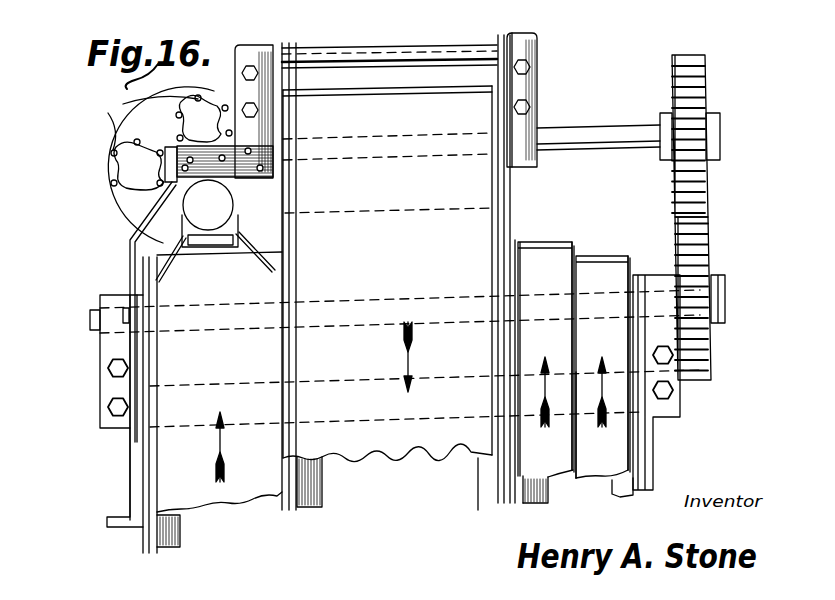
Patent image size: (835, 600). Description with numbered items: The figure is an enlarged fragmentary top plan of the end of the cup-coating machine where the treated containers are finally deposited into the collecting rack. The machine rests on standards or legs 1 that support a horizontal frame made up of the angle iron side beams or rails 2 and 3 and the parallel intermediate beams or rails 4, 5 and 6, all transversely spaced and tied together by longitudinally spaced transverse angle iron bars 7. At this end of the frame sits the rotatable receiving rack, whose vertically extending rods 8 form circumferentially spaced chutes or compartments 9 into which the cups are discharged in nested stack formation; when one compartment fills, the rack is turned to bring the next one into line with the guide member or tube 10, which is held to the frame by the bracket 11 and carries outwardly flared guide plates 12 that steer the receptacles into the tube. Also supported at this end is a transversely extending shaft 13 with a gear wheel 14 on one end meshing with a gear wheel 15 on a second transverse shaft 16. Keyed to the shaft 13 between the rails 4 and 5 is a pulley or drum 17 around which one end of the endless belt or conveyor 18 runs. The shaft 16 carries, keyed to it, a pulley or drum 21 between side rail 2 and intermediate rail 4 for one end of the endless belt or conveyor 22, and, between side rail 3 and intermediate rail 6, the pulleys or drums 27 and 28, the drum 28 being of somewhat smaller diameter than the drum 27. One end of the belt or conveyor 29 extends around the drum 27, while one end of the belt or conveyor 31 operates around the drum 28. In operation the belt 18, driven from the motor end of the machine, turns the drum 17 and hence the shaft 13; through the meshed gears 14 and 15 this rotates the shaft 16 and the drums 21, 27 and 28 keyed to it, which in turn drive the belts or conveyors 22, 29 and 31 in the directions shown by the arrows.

The standards or legs 1 is at (112, 518).
The angle iron side beam or rail 2 is at (167, 547).
The angle iron side beam or rail 3 is at (628, 482).
The intermediate beam or rail 4 is at (303, 510).
The intermediate beam or rail 5 is at (497, 488).
The intermediate beam or rail 6 is at (536, 497).
The transversely extending angle iron bars 7 is at (578, 415).
The vertically extending rods 8 is at (112, 120).
The chutes or compartments 9 is at (208, 112).
The guide member or tube 10 is at (232, 208).
The bracket 11 is at (201, 156).
The outwardly flared guide plates 12 is at (240, 247).
The transversely extending shaft 13 is at (578, 130).
The gear wheel 14 is at (672, 55).
The gear wheel 15 is at (700, 236).
The shaft 16 is at (717, 288).
The pulley or drum 17 is at (478, 87).
The endless belt or conveyor 18 is at (488, 230).
The pulley or drum 21 is at (150, 268).
The endless belt or conveyor 22 is at (175, 460).
The pulley or drum 27 is at (573, 238).
The pulley or drum 28 is at (628, 256).
The belt or conveyor 29 is at (549, 256).
The belt or conveyor 31 is at (605, 256).